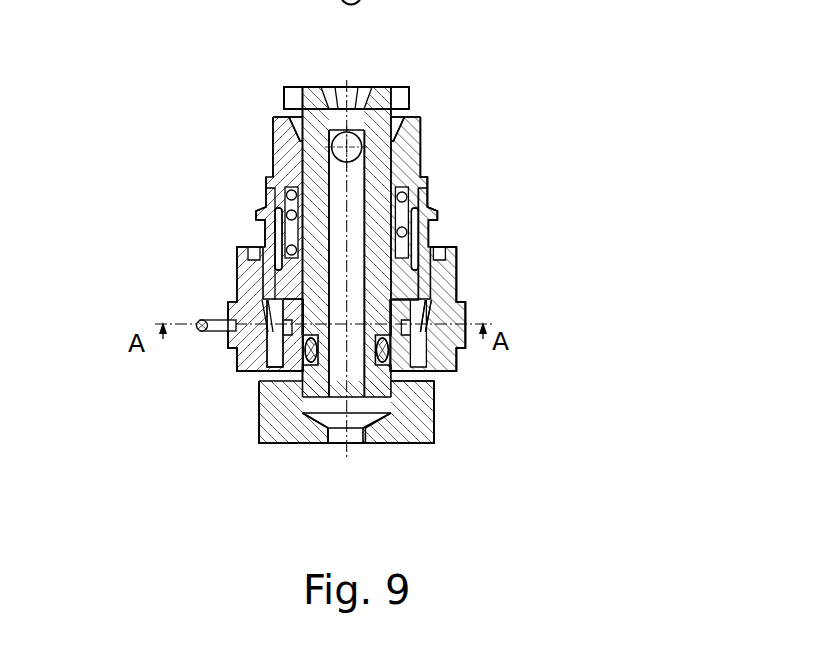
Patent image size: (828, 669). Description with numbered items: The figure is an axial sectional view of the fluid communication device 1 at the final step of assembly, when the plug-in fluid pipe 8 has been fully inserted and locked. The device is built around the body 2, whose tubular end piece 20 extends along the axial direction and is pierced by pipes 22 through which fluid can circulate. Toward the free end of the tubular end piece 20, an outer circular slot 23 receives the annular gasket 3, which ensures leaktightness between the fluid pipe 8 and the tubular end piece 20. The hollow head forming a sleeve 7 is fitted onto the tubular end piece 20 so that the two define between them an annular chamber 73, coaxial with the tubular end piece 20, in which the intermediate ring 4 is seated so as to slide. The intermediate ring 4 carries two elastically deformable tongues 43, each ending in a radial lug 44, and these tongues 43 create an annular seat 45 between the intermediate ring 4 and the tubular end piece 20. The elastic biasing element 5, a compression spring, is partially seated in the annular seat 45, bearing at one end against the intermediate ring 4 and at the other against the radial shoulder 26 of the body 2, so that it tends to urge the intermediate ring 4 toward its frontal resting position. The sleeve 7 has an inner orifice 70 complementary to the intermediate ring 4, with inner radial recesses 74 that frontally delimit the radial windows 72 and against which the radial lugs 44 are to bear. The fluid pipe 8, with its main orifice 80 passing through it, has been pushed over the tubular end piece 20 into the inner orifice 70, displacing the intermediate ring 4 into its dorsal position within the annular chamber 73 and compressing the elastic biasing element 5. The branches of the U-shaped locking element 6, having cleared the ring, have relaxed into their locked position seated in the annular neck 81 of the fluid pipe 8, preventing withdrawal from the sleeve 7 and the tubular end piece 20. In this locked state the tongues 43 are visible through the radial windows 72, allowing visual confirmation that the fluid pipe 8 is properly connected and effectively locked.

The fluid communication device 1 is at (128, 488).
The tubular body 2 is at (412, 80).
The annular gasket 3 is at (282, 365).
The intermediate ring 4 is at (436, 295).
The elastic biasing element 5 is at (424, 177).
The locking element 6 is at (200, 325).
The sleeve 7 is at (450, 111).
The fluid pipe 8 is at (420, 432).
The tubular end piece 20 is at (302, 160).
The pipes 22 is at (343, 141).
The outer circular slot 23 is at (313, 376).
The radial shoulder 26 is at (296, 186).
The tongues 43 is at (268, 234).
The radial lugs 44 is at (266, 205).
The annular seat 45 is at (437, 217).
The inner orifice 70 is at (254, 376).
The radial windows 72 is at (238, 236).
The annular chamber 73 is at (422, 347).
The inner radial recesses 74 is at (242, 247).
The main orifice 80 is at (357, 448).
The annular neck 81 is at (245, 328).